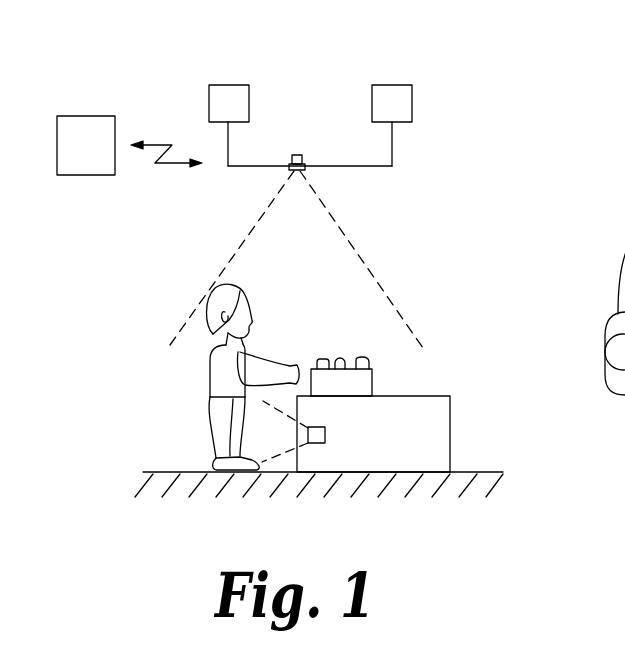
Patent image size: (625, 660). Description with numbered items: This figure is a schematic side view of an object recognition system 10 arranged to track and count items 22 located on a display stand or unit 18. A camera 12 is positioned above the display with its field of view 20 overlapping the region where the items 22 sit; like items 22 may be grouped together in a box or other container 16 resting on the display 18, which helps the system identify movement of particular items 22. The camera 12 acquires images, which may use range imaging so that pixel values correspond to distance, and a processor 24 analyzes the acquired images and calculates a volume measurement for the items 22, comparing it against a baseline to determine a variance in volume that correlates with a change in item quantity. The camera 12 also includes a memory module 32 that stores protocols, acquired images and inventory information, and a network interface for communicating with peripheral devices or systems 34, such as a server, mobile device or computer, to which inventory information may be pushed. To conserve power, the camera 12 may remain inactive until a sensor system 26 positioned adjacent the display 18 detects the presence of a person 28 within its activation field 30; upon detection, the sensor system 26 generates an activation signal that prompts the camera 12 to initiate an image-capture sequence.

The object recognition system 10 is at (150, 284).
The camera 12 is at (296, 155).
The box or other container 16 is at (372, 383).
The display stand or unit 18 is at (432, 433).
The field of view 20 is at (320, 230).
The items 22 is at (364, 358).
The processor 24 is at (228, 85).
The sensor system 26 is at (325, 433).
The person 28 is at (220, 381).
The activation field 30 is at (281, 432).
The memory module 32 is at (392, 85).
The peripheral devices or systems 34 is at (86, 116).